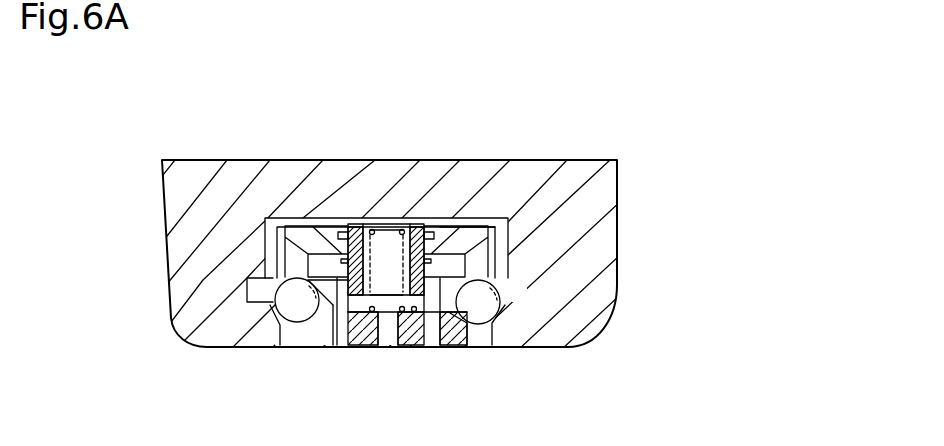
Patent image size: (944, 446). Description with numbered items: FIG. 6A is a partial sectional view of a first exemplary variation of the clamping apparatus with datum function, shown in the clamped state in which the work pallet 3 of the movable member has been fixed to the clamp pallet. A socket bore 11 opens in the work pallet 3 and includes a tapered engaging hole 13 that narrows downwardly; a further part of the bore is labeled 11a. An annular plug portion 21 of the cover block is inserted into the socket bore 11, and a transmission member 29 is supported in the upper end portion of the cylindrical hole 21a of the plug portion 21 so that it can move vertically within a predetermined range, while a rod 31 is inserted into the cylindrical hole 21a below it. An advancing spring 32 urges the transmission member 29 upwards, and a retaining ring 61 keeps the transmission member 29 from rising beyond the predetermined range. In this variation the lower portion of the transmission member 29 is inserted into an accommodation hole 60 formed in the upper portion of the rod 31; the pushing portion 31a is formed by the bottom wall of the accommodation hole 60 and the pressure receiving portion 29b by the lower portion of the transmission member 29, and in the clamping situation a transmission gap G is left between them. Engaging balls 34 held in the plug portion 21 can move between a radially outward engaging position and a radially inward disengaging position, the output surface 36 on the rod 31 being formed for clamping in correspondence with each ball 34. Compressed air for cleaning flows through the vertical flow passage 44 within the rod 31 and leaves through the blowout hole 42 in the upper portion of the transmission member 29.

The work pallet 3 is at (571, 159).
The retaining ring 61 is at (468, 217).
The engaging ball 34 is at (264, 277).
The socket bore 11 is at (500, 243).
The bracket upper surface 11a is at (457, 178).
The plug portion 21 is at (307, 217).
The cylindrical hole 21a is at (315, 338).
The transmission member 29 is at (387, 213).
The pressure receiving portion 29b is at (455, 278).
The blowout hole 42 is at (357, 223).
The advancing spring 32 is at (418, 224).
The rod 31 is at (455, 345).
The pushing portion 31a is at (413, 340).
The vertical flow passage 44 is at (383, 340).
The accommodation hole 60 is at (422, 340).
The transmission gap G is at (334, 335).
The tapered engaging hole 13 is at (268, 310).
The output surface 36 is at (500, 292).